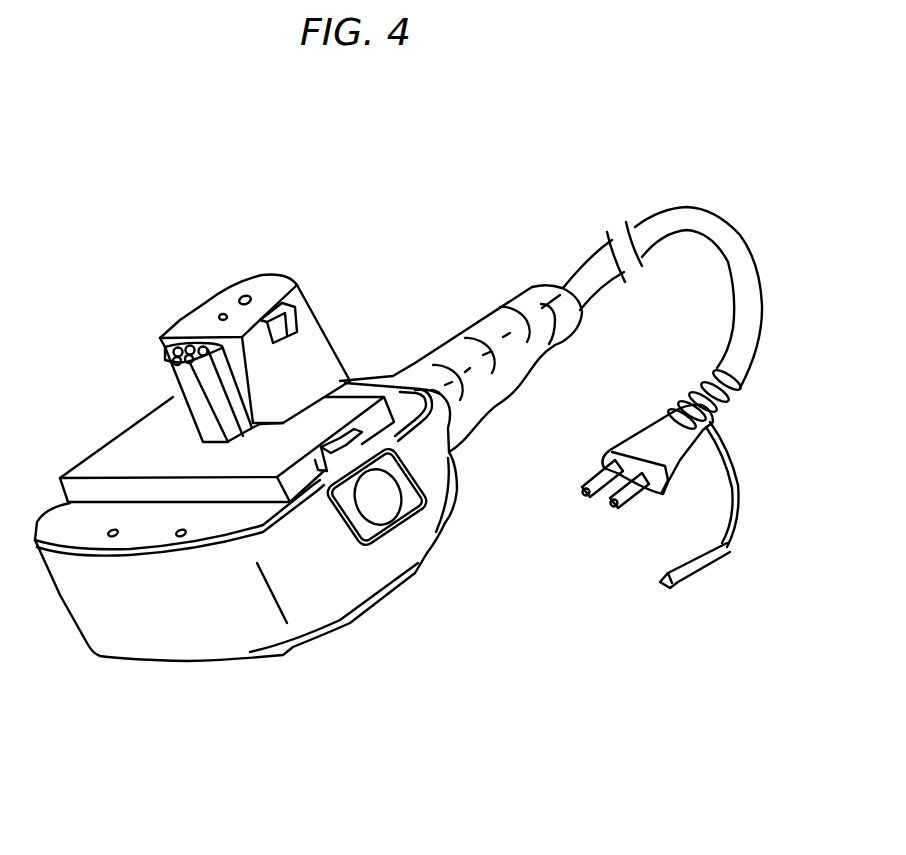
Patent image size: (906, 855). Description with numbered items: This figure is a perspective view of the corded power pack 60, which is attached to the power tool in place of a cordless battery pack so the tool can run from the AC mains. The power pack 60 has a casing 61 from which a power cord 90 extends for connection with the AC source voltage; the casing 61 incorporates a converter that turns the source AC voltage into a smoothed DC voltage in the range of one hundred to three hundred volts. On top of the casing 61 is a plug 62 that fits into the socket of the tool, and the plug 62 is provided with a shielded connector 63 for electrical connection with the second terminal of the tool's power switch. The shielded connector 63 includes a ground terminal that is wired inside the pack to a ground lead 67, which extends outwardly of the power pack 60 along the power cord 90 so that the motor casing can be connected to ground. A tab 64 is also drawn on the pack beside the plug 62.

The corded power pack 60 is at (246, 559).
The casing 61 is at (305, 617).
The plug 62 is at (313, 343).
The shielded connector 63 is at (185, 387).
The latch tab 64 is at (342, 447).
The ground lead 67 is at (740, 507).
The power cord 90 is at (733, 237).